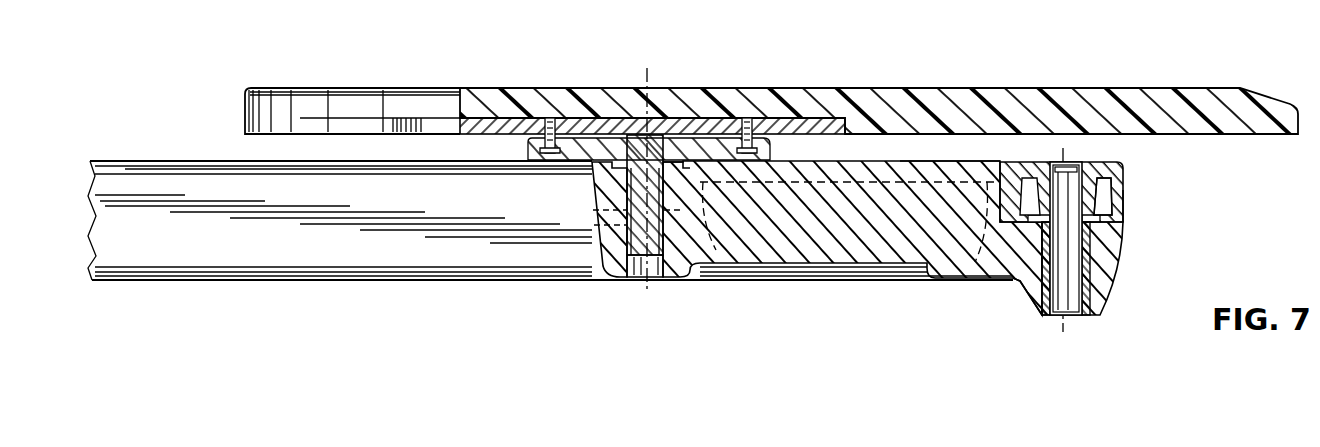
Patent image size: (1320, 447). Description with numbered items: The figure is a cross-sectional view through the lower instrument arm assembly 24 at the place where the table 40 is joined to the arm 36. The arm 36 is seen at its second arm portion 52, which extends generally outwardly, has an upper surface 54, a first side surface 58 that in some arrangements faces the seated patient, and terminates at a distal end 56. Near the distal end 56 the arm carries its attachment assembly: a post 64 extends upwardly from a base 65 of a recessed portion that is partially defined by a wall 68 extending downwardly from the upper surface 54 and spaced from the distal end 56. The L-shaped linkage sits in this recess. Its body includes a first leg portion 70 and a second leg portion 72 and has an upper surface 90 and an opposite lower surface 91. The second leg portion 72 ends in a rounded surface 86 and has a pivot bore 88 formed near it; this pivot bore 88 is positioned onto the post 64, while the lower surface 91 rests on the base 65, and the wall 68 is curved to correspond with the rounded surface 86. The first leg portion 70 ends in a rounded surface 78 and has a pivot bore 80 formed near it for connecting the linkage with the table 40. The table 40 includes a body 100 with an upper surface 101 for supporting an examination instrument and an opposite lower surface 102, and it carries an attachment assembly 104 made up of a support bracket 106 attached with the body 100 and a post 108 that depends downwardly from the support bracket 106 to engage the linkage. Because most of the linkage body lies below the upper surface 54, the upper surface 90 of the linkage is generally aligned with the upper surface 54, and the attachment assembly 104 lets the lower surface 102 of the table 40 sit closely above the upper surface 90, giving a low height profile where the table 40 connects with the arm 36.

The lower instrument arm assembly 24 is at (1102, 44).
The arm 36 is at (124, 157).
The table 40 is at (266, 88).
The second arm portion 52 is at (247, 273).
The upper surface 54 is at (179, 161).
The distal end 56 is at (1118, 273).
The first side surface 58 is at (163, 243).
The post 64 is at (1058, 275).
The base 65 is at (1120, 209).
The wall 68 is at (1013, 176).
The first leg portion 70 is at (813, 250).
The second leg portion 72 is at (1100, 192).
The rounded surface 78 is at (597, 233).
The pivot bore 80 is at (639, 276).
The rounded surface 86 is at (1103, 196).
The pivot bore 88 is at (1062, 178).
The upper surface 90 is at (943, 160).
The lower surface 91 is at (881, 264).
The body 100 is at (760, 102).
The upper surface 101 is at (1210, 88).
The lower surface 102 is at (1210, 137).
The attachment assembly 104 is at (826, 150).
The support bracket 106 is at (497, 118).
The post 108 is at (706, 185).